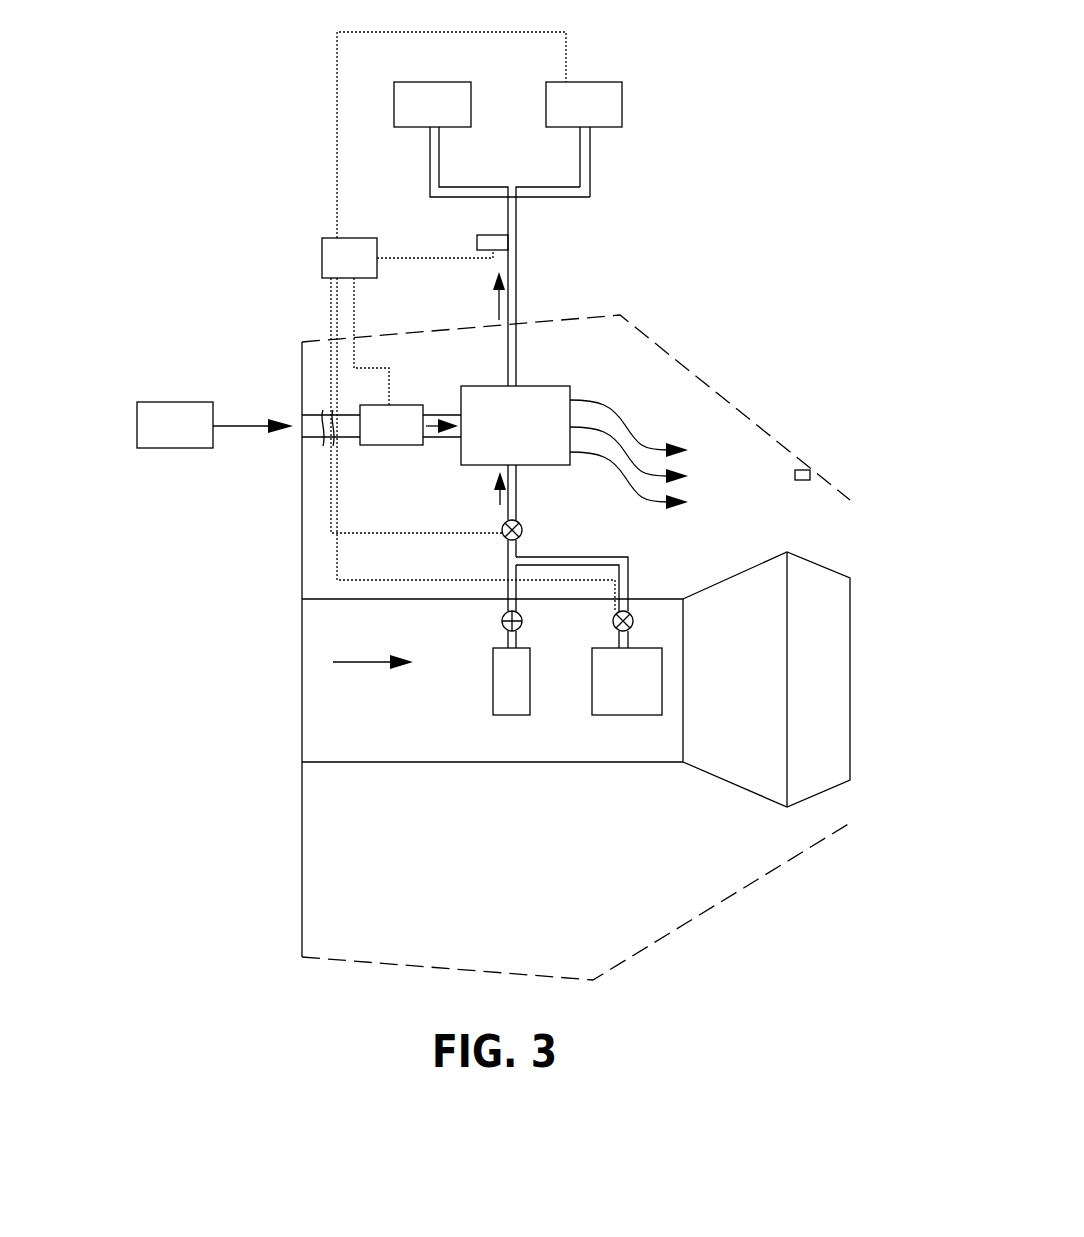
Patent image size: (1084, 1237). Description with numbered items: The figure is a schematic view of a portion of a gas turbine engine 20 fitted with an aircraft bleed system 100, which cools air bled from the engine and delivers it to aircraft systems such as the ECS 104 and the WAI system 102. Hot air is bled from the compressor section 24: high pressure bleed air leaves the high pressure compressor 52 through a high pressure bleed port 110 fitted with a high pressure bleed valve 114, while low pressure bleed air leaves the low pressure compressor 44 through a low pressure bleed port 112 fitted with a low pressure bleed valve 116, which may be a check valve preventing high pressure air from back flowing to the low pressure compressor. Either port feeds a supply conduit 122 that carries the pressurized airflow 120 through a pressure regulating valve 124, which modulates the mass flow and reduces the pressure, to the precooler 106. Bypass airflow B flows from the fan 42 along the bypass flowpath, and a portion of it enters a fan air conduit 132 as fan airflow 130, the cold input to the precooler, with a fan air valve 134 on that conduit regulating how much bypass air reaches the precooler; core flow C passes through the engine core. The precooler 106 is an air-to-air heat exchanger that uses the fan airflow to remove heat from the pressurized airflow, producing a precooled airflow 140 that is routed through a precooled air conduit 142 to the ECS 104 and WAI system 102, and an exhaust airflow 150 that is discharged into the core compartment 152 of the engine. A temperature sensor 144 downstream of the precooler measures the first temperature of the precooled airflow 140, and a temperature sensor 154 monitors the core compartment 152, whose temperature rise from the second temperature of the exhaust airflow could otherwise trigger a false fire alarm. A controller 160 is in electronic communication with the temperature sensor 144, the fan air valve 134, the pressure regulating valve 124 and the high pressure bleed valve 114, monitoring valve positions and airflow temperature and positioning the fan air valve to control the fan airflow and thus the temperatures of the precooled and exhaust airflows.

The aircraft bleed system 100 is at (225, 85).
The WAI system 102 is at (622, 108).
The ECS 104 is at (471, 120).
The precooler 106 is at (535, 386).
The high pressure bleed port 110 is at (628, 645).
The low pressure bleed port 112 is at (517, 641).
The high pressure bleed valve 114 is at (613, 621).
The low pressure bleed valve 116 is at (502, 626).
The pressurized airflow 120 is at (518, 503).
The supply conduit 122 is at (502, 522).
The pressure regulating valve 124 is at (522, 530).
The fan airflow 130 is at (432, 440).
The fan air conduit 132 is at (450, 412).
The fan air valve 134 is at (366, 445).
The precooled airflow 140 is at (517, 278).
The precooled air conduit 142 is at (517, 308).
The temperature sensor 144 is at (477, 243).
The exhaust airflow 150 is at (608, 400).
The core compartment 152 is at (758, 878).
The temperature sensor 154 is at (795, 477).
The controller 160 is at (322, 252).
The gas turbine engine 20 is at (340, 762).
The compressor section 24 is at (667, 768).
The fan 42 is at (165, 402).
The low pressure compressor 44 is at (493, 703).
The high pressure compressor 52 is at (592, 703).
The bypass airflow B is at (258, 430).
The core air flow C is at (362, 663).